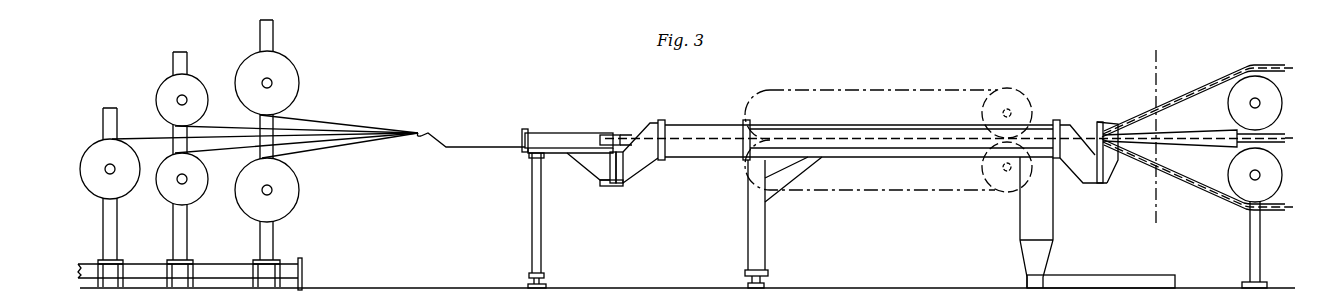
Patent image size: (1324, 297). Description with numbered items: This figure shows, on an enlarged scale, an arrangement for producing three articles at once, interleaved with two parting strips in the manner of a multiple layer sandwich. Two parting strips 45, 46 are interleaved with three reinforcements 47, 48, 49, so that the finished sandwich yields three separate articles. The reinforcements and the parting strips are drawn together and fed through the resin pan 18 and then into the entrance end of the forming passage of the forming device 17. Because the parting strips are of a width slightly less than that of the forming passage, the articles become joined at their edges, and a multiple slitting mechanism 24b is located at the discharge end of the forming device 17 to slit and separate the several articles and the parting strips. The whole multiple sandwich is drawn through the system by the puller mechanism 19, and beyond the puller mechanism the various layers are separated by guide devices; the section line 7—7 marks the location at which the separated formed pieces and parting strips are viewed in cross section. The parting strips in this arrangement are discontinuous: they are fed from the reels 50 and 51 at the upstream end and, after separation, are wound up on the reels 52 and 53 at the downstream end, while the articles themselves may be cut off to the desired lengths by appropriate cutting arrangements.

The section line 7— 7 is at (1170, 62).
The forming device 17 is at (535, 133).
The resin pan 18 is at (472, 157).
The puller mechanism 19 is at (860, 84).
The multiple slitting mechanism 24b is at (619, 132).
The parting strip 45 is at (327, 128).
The parting strip 46 is at (312, 143).
The reinforcement 47 is at (313, 118).
The reinforcement 48 is at (215, 140).
The reinforcement 49 is at (355, 148).
The reel 50 is at (193, 72).
The reel 51 is at (197, 190).
The reel 52 is at (1272, 95).
The reel 53 is at (1273, 167).